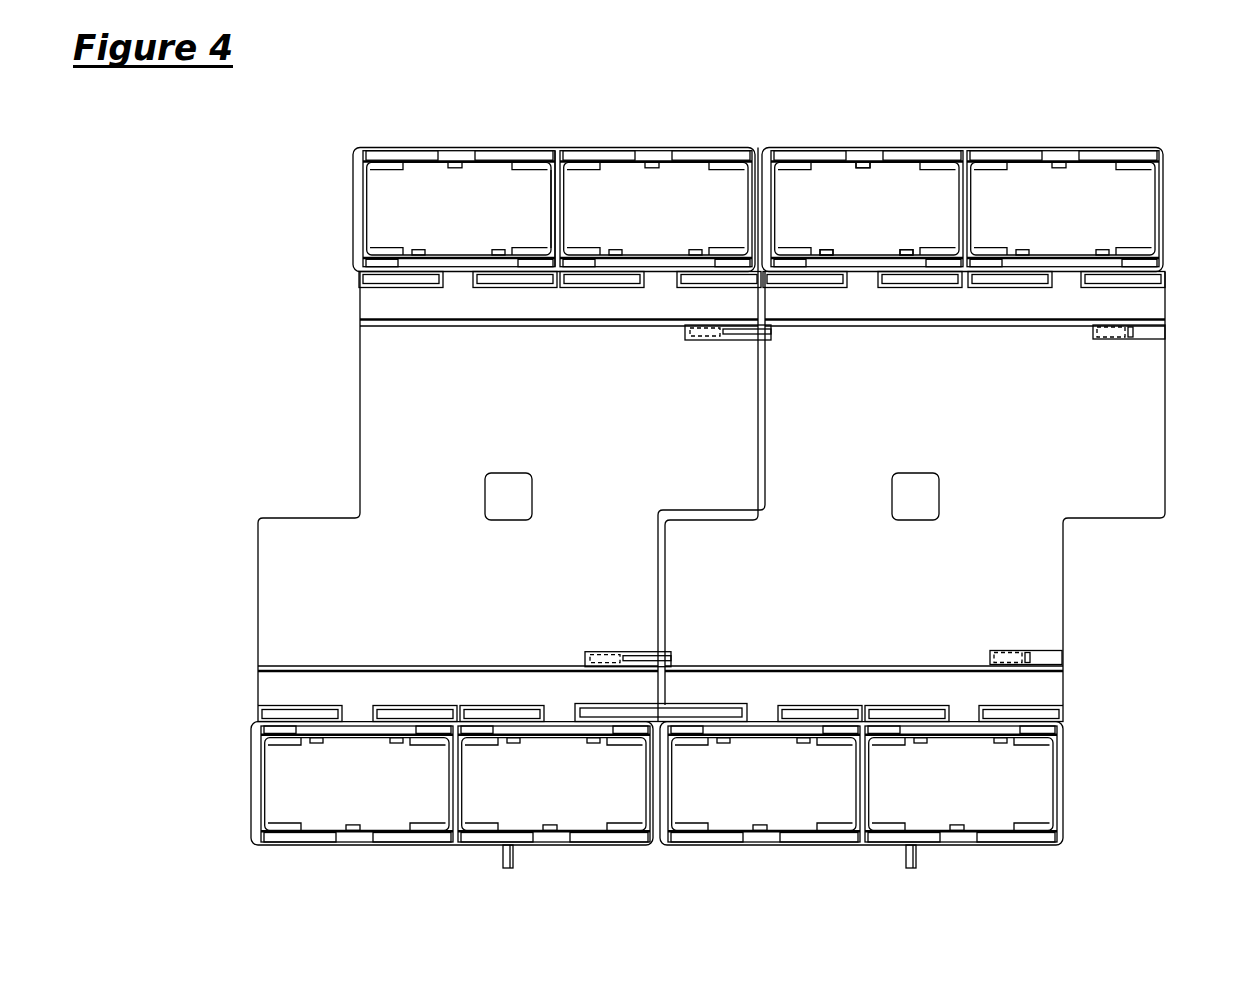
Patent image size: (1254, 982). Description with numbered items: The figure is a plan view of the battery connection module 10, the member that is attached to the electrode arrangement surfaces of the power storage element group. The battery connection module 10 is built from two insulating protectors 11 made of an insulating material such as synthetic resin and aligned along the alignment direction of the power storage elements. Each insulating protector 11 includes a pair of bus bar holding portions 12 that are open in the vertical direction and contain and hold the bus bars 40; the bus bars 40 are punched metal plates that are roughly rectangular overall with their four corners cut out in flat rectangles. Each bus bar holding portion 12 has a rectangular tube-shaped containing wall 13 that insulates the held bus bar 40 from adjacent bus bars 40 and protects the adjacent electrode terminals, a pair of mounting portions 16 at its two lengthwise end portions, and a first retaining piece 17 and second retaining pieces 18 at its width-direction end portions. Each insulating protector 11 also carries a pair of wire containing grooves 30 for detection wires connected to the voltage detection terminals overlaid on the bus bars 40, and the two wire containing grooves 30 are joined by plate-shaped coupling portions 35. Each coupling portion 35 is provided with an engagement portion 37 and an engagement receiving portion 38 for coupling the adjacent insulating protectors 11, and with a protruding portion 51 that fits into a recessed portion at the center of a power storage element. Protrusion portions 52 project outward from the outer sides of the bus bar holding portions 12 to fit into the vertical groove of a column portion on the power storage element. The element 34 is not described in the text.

The battery connection module 10 is at (792, 932).
The insulating protector 11 is at (557, 168).
The bus bar holding portion 12 is at (458, 252).
The containing wall 13 is at (556, 172).
The mounting portion 16 is at (549, 207).
The first retaining piece 17 is at (860, 157).
The second retaining piece 18 is at (820, 250).
The wire containing groove 30 is at (1130, 303).
The mounting pad 34 is at (470, 281).
The coupling portion 35 is at (380, 360).
The engagement portion 37 is at (630, 652).
The engagement receiving portion 38 is at (600, 660).
The bus bar 40 is at (390, 186).
The protruding portion 51 is at (508, 473).
The protrusion portion 52 is at (505, 862).